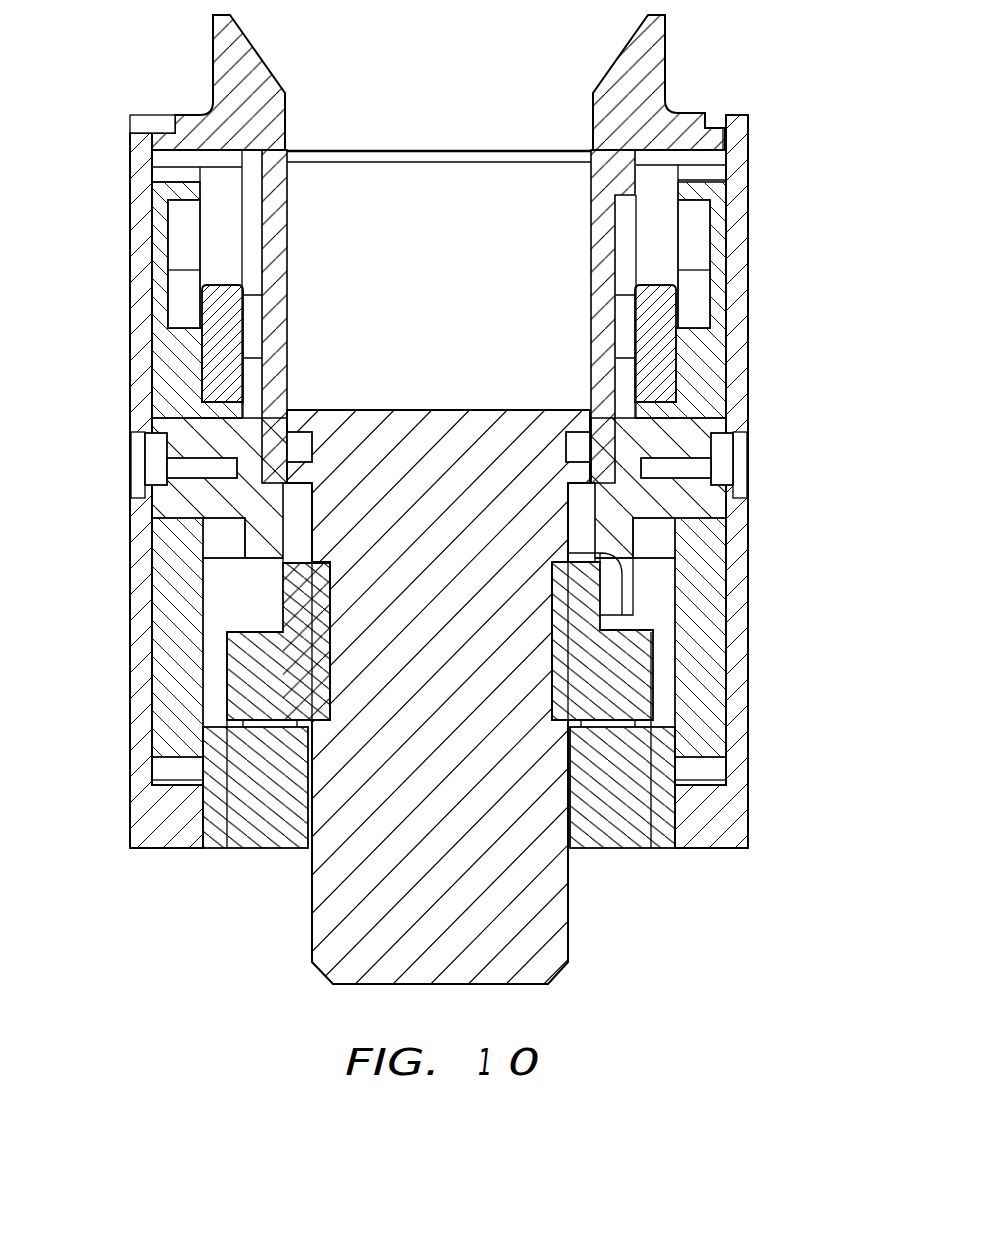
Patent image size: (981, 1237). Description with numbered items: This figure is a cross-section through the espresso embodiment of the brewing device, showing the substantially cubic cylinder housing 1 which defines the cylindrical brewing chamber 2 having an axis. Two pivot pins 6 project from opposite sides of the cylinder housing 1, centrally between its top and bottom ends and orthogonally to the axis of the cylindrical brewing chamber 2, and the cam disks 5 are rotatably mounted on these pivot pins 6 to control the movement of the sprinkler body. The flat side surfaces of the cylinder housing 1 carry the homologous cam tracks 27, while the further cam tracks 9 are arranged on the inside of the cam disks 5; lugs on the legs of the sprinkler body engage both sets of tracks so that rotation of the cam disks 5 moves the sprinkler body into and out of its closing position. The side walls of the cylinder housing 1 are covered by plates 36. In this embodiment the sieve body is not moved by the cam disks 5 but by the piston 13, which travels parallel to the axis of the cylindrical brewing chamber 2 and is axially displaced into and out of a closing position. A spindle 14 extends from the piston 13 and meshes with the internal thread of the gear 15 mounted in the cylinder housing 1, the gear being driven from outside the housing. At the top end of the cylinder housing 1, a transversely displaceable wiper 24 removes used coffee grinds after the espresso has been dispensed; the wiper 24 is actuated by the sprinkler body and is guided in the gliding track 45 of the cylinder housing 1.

The cylinder housing 1 is at (602, 247).
The cylindrical brewing chamber 2 is at (300, 268).
The cam disks 5 is at (172, 365).
The pivot pins 6 is at (183, 503).
The further cam tracks 9 is at (182, 298).
The piston 13 is at (305, 418).
The spindle 14 is at (505, 920).
The gear 15 is at (622, 675).
The wiper 24 is at (650, 77).
The homologous cam tracks 27 is at (252, 255).
The plates 36 is at (142, 636).
The gliding track 45 is at (718, 121).